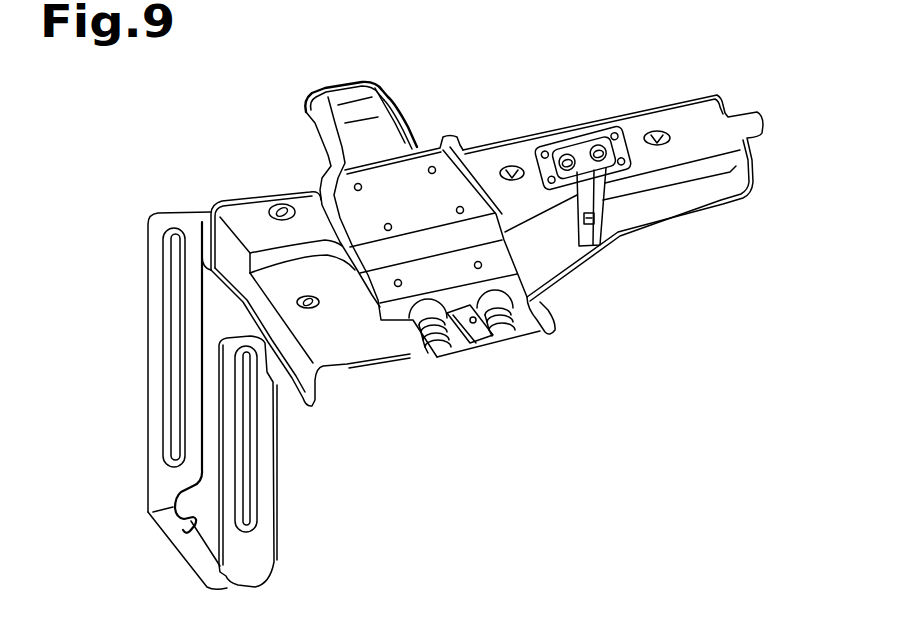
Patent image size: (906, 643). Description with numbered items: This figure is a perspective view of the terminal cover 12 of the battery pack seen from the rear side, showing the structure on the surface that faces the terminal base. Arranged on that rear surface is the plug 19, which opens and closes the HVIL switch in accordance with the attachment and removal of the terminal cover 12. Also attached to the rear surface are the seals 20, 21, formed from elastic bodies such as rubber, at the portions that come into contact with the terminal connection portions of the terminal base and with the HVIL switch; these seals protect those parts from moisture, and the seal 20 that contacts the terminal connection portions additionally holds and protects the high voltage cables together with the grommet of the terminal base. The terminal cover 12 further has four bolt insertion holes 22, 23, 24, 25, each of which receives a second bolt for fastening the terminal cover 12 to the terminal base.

The terminal cover 12 is at (720, 207).
The plug 19 is at (594, 246).
The seal 20 is at (484, 170).
The seal 21 is at (633, 140).
The bolt insertion hole 22 is at (657, 130).
The bolt insertion hole 23 is at (270, 221).
The bolt insertion hole 24 is at (512, 166).
The bolt insertion hole 25 is at (310, 310).